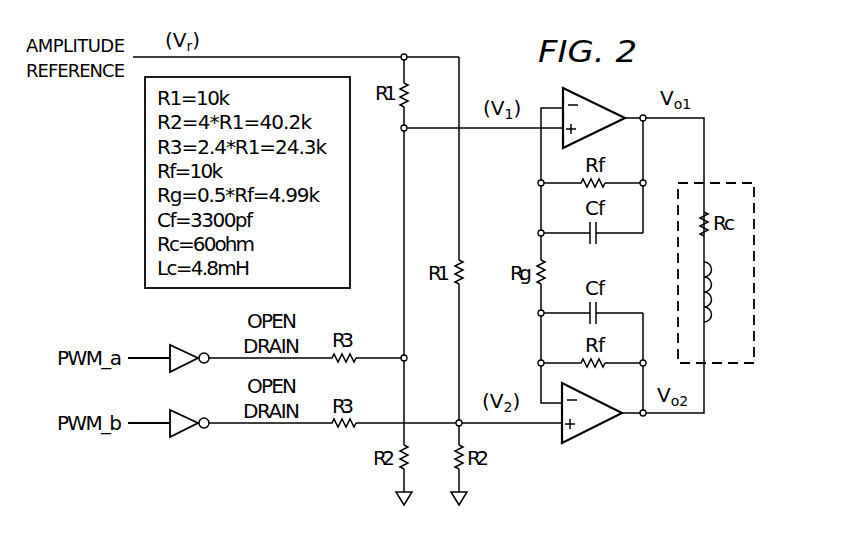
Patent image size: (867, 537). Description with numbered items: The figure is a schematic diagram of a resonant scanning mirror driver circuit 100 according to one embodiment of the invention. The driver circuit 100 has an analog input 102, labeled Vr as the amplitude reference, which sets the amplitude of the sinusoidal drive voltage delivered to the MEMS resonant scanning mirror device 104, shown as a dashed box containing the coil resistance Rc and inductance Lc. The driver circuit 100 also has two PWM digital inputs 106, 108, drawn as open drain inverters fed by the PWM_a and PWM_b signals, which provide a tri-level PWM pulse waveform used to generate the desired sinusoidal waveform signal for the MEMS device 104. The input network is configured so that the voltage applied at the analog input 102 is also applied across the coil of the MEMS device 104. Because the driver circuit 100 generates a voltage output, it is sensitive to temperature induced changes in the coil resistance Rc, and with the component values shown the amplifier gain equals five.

The resonant scanning mirror driver circuit 100 is at (760, 98).
The analog input 102 is at (295, 56).
The MEMS resonant scanning mirror device 104 is at (756, 303).
The PWM digital input 106 is at (150, 356).
The PWM digital input 108 is at (150, 425).